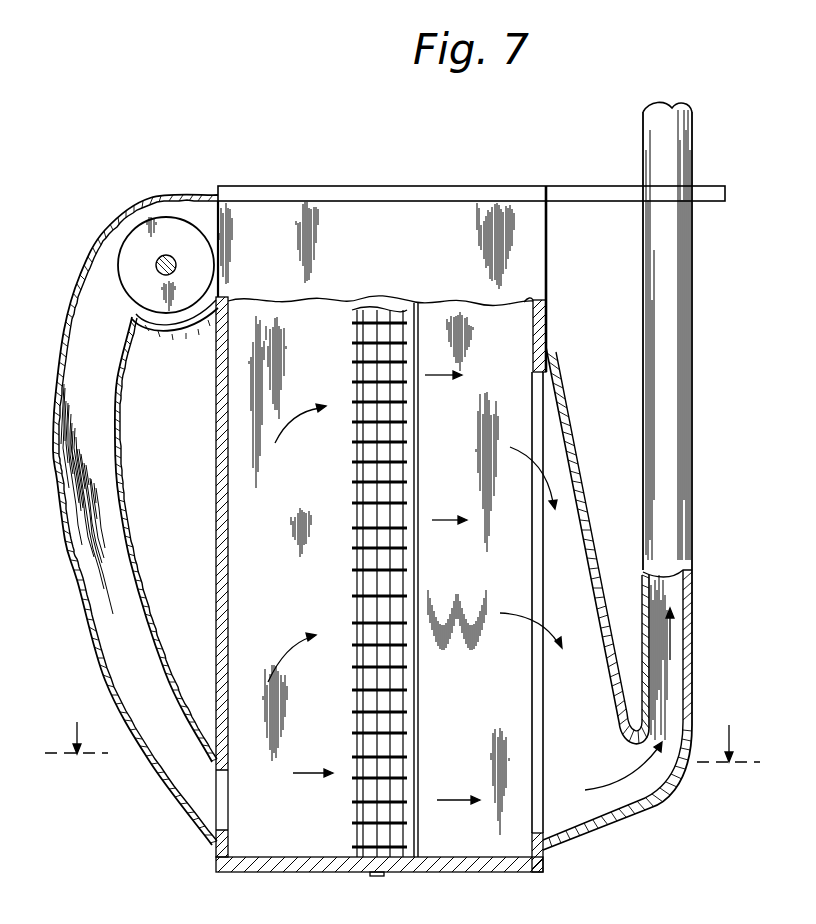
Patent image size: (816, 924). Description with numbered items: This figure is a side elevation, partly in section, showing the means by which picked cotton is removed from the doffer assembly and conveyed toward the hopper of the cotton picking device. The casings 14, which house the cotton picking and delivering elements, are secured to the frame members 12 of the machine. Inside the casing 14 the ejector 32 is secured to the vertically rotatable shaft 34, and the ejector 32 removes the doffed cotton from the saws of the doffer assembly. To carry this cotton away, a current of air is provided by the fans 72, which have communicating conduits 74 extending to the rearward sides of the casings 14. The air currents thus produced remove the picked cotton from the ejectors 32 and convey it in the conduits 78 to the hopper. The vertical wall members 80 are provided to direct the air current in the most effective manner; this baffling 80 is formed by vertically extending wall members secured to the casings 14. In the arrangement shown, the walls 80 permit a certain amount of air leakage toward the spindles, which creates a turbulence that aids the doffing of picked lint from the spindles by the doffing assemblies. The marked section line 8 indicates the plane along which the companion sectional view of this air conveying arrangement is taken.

The frame members 12 is at (603, 205).
The casings 14 is at (530, 257).
The ejector 32 is at (400, 690).
The vertically rotatable shaft 34 is at (382, 700).
The fans 72 is at (153, 248).
The communicating conduits 74 is at (80, 598).
The conduits 78 is at (682, 286).
The vertical wall members 80 is at (255, 594).
The section line 8- 8 is at (402, 726).